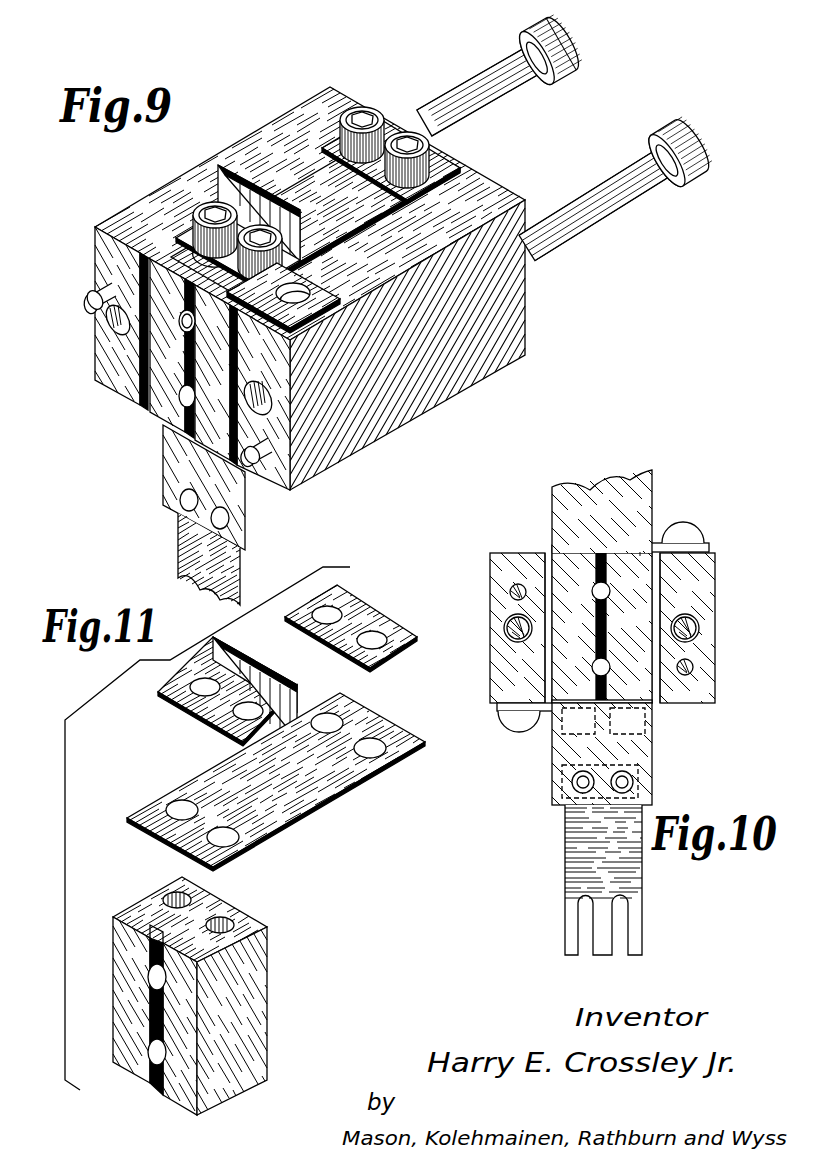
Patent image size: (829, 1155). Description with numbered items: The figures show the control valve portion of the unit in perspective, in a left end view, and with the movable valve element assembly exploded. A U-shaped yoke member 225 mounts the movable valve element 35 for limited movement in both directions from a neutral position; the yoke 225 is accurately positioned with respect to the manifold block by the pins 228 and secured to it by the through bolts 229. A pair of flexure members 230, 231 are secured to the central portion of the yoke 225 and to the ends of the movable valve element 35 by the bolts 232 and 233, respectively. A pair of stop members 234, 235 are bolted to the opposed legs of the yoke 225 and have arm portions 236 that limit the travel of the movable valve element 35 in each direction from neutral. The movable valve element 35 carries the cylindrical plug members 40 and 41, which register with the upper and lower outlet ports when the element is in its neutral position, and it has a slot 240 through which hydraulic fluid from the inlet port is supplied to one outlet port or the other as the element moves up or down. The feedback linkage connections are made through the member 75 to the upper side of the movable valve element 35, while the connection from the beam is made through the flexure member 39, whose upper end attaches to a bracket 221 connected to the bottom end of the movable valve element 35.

In FIG. 9, the movable valve element 35 is at (158, 406).
In FIG. 10, the movable valve element 35 is at (660, 628).
In FIG. 11, the movable valve element 35 is at (256, 996).
In FIG. 9, the flexure member 39 is at (234, 566).
In FIG. 10, the flexure member 39 is at (638, 873).
In FIG. 9, the plug member 40 is at (178, 318).
In FIG. 10, the plug member 40 is at (611, 590).
In FIG. 11, the plug member 40 is at (150, 973).
In FIG. 9, the plug member 41 is at (196, 394).
In FIG. 10, the plug member 41 is at (611, 667).
In FIG. 11, the plug member 41 is at (150, 1048).
In FIG. 9, the member 75 is at (218, 176).
In FIG. 10, the member 75 is at (645, 485).
In FIG. 11, the member 75 is at (210, 705).
In FIG. 9, the bracket 221 is at (242, 530).
In FIG. 10, the bracket 221 is at (645, 749).
In FIG. 9, the U-shaped yoke member 225 is at (455, 382).
In FIG. 10, the U-shaped yoke member 225 is at (718, 580).
In FIG. 9, the pins 228 is at (105, 277).
In FIG. 10, the pins 228 is at (509, 590).
In FIG. 9, the through bolts 229 is at (497, 110).
In FIG. 10, the through bolts 229 is at (508, 627).
In FIG. 9, the flexure member 230 is at (288, 180).
In FIG. 10, the flexure member 230 is at (548, 552).
In FIG. 11, the flexure member 230 is at (318, 790).
In FIG. 10, the flexure member 231 is at (587, 699).
In FIG. 9, the bolts 232 is at (396, 132).
In FIG. 9, the bolts 233 is at (196, 250).
In FIG. 10, the bolts 233 is at (622, 516).
In FIG. 9, the stop member 234 is at (318, 299).
In FIG. 10, the stop member 234 is at (663, 540).
In FIG. 10, the stop member 235 is at (497, 707).
In FIG. 9, the arm portions 236 is at (206, 306).
In FIG. 10, the arm portions 236 is at (640, 552).
In FIG. 9, the slot 240 is at (192, 352).
In FIG. 10, the slot 240 is at (595, 632).
In FIG. 11, the slot 240 is at (150, 1000).